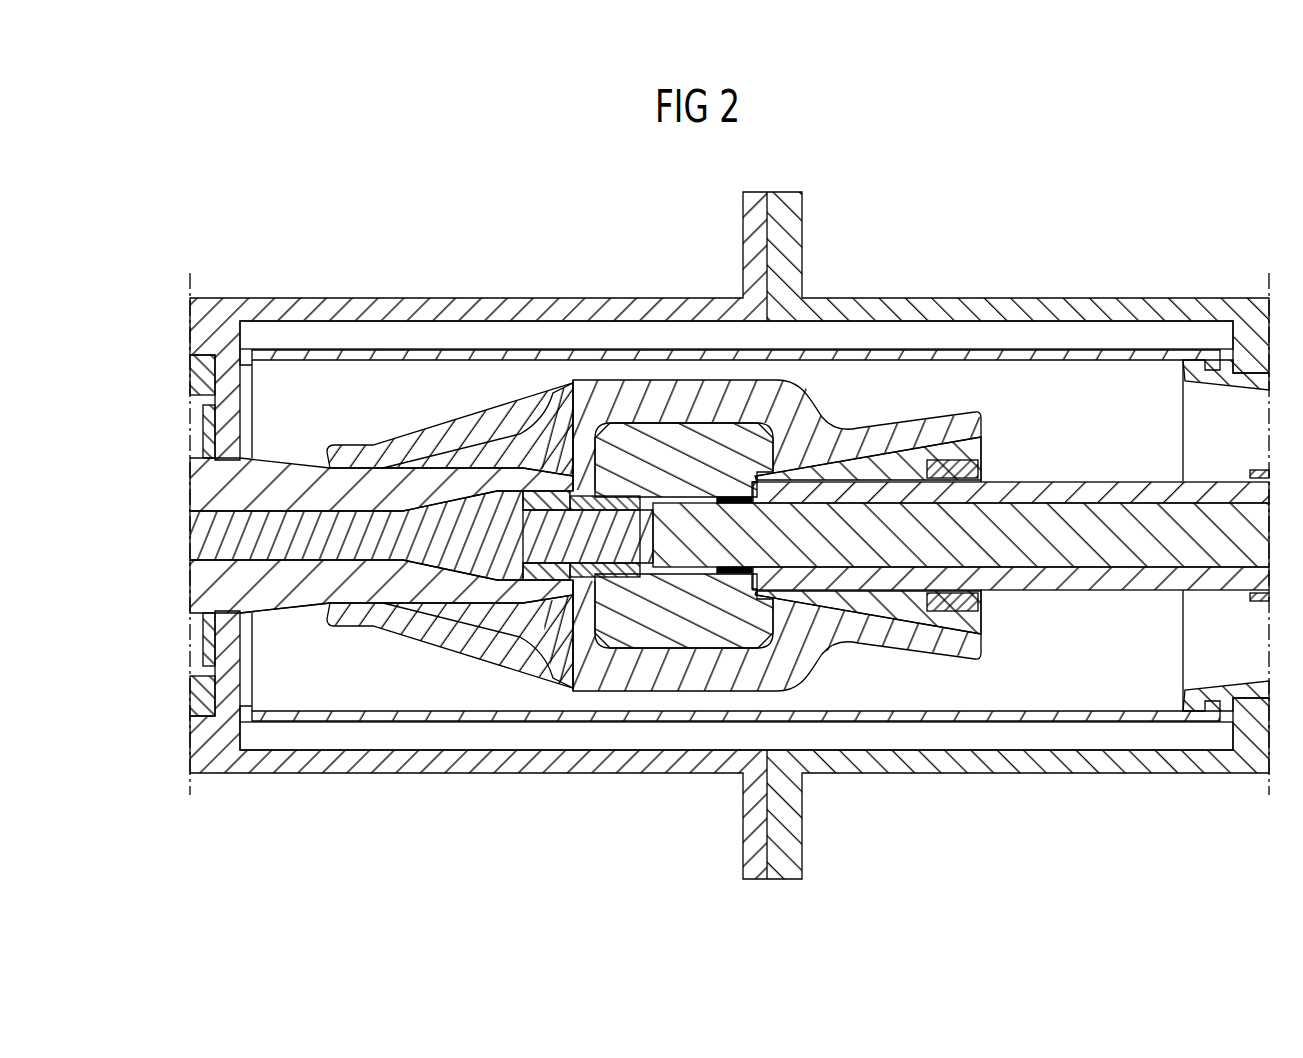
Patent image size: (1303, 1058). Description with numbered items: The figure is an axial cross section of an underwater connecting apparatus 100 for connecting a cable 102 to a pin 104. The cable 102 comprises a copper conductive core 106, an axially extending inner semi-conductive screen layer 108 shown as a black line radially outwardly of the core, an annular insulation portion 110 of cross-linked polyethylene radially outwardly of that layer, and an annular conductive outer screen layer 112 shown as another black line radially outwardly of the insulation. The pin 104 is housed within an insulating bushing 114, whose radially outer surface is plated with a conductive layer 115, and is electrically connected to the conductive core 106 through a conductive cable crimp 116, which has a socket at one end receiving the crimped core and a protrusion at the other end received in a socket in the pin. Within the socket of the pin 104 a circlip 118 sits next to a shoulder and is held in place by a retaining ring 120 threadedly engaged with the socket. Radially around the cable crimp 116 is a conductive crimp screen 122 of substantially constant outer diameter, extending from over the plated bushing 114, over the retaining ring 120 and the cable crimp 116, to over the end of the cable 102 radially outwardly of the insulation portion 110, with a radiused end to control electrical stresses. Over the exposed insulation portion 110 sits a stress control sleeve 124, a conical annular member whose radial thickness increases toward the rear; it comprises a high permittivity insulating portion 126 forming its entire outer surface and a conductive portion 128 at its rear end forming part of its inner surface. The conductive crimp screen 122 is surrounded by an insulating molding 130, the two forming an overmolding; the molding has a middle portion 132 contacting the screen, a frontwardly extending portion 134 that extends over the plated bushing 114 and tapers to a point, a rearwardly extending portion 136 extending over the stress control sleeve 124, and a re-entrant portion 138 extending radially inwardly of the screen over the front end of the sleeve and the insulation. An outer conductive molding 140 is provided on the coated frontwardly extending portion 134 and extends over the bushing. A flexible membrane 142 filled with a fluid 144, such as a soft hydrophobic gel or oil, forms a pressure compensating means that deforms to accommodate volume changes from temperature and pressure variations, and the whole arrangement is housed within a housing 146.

The underwater connecting apparatus 100 is at (1184, 238).
The cable 102 is at (1192, 470).
The pin 104 is at (305, 540).
The conductive core 106 is at (1105, 556).
The inner semi-conductive screen layer 108 is at (720, 670).
The insulation portion 110 is at (1023, 481).
The conductive outer screen layer 112 is at (1027, 594).
The insulating bushing 114 is at (200, 488).
The conductive layer 115 is at (268, 612).
The cable crimp 116 is at (495, 630).
The circlip 118 is at (573, 473).
The retaining ring 120 is at (630, 473).
The conductive crimp screen 122 is at (660, 450).
The stress control sleeve 124 is at (906, 642).
The insulating portion 126 is at (863, 467).
The conductive portion 128 is at (952, 460).
The insulating molding 130 is at (585, 672).
The middle portion 132 is at (735, 585).
The frontwardly extending portion 134 is at (437, 460).
The rearwardly extending portion 136 is at (958, 643).
The re-entrant portion 138 is at (777, 600).
The outer conductive molding 140 is at (385, 455).
The flexible membrane 142 is at (697, 347).
The fluid 144 is at (1088, 392).
The housing 146 is at (462, 300).